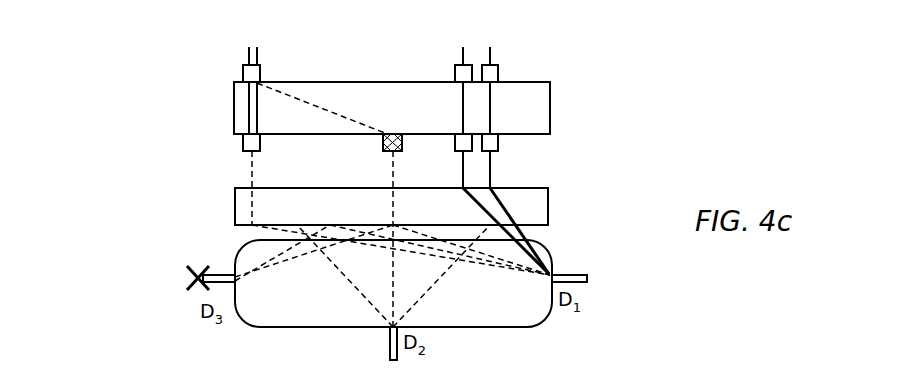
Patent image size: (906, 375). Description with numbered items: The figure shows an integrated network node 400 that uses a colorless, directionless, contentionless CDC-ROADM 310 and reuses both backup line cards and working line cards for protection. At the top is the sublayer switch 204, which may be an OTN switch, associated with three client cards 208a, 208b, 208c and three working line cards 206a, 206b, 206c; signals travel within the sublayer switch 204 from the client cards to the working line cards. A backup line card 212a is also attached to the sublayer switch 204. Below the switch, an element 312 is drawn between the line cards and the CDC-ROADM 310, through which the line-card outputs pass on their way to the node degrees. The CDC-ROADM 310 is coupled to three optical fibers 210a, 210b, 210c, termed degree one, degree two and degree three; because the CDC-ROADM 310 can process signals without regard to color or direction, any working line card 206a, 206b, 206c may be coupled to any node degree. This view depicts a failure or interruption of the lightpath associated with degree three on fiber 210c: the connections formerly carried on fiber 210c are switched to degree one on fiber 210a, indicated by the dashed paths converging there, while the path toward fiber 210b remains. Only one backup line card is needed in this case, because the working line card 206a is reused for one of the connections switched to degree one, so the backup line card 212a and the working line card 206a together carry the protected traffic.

The integrated network node 400 is at (112, 91).
The sublayer switch 204 is at (427, 118).
The client card 208a is at (243, 70).
The client card 208b is at (455, 71).
The client card 208c is at (494, 64).
The working line card 206a is at (260, 140).
The working line card 206b is at (455, 141).
The working line card 206c is at (498, 143).
The backup line card 212a is at (383, 148).
The optical element 312 is at (548, 215).
The CDC-ROADM 310 is at (492, 309).
The optical fiber 210a is at (568, 274).
The optical fiber 210b is at (390, 334).
The optical fiber 210c is at (233, 270).